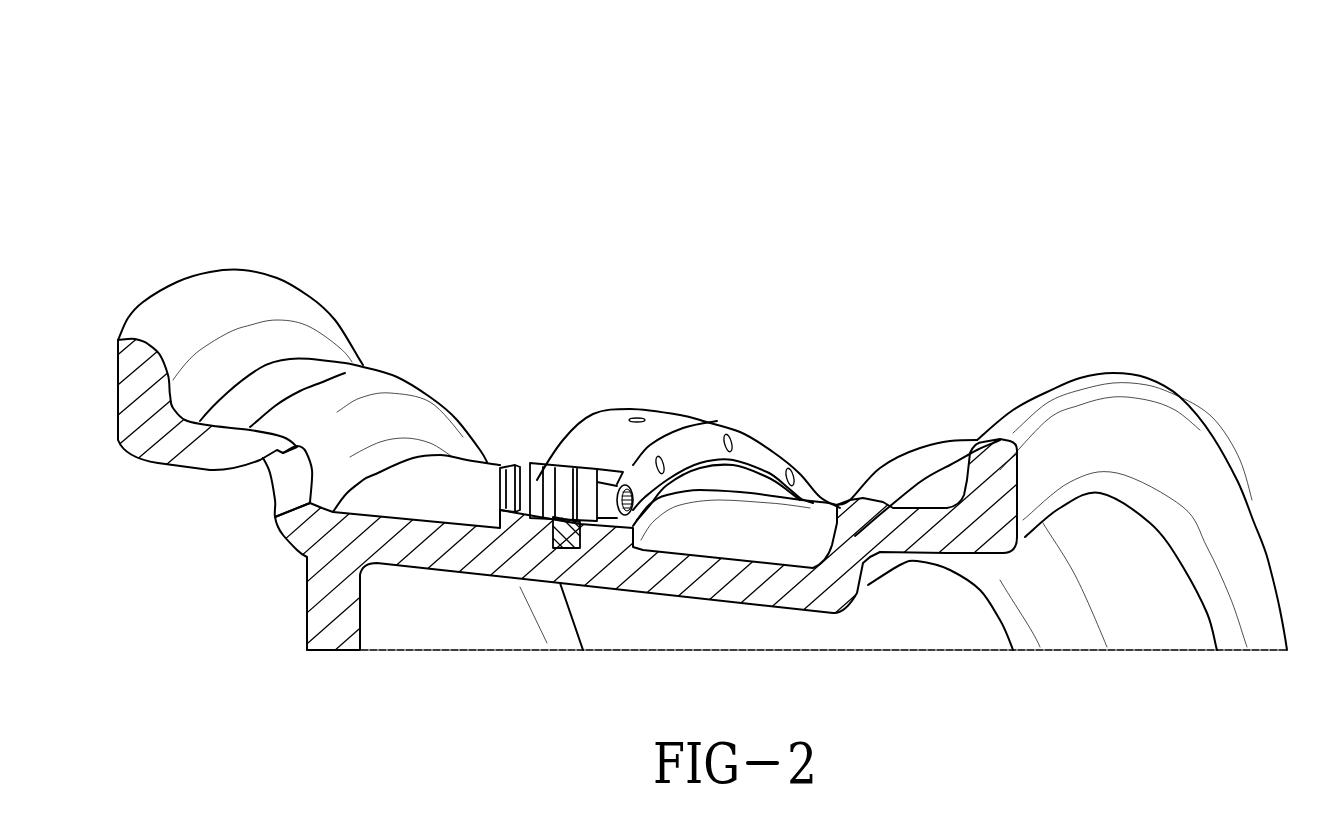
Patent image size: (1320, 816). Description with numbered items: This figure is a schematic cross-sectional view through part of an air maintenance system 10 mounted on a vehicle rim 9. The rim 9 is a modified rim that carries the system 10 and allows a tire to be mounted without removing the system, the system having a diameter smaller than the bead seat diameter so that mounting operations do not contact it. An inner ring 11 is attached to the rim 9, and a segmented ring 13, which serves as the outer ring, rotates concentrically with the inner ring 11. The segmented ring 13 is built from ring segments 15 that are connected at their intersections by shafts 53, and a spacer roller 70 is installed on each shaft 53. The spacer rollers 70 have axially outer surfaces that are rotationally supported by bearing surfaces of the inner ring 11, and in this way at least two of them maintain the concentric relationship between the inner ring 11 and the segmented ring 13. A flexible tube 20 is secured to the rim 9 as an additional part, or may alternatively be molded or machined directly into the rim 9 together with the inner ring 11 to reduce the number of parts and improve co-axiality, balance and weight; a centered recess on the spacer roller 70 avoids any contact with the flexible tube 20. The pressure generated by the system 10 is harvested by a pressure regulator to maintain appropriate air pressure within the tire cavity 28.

The vehicle rim 9 is at (1025, 400).
The air maintenance system 10 is at (232, 183).
The inner ring 11 is at (763, 470).
The segmented ring 13 is at (705, 421).
The ring segments 15 is at (650, 425).
The flexible tube 20 is at (567, 552).
The tire cavity 28 is at (450, 328).
The shaft 53 is at (512, 478).
The spacer roller 70 is at (574, 461).